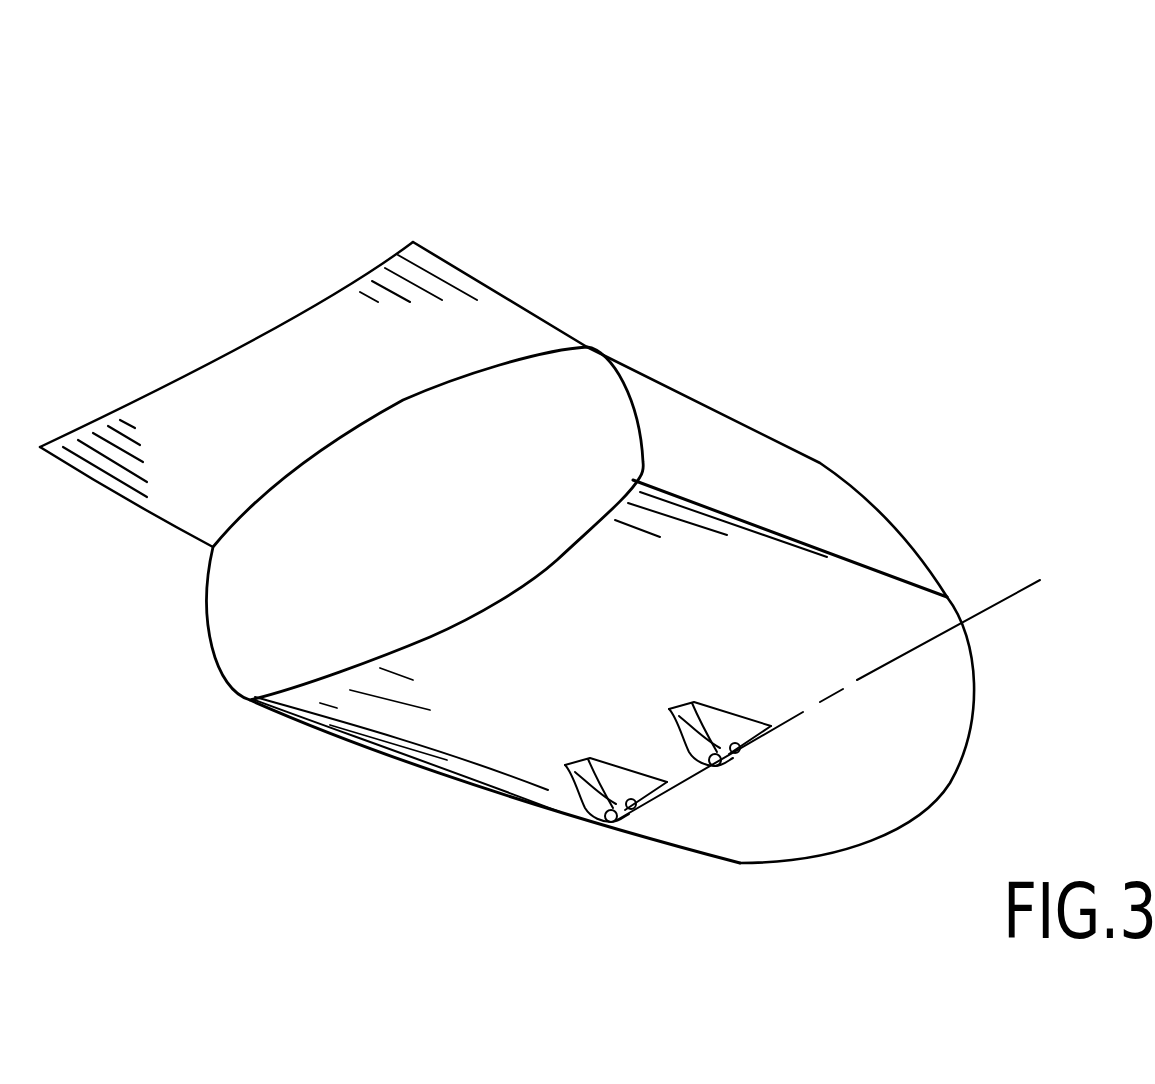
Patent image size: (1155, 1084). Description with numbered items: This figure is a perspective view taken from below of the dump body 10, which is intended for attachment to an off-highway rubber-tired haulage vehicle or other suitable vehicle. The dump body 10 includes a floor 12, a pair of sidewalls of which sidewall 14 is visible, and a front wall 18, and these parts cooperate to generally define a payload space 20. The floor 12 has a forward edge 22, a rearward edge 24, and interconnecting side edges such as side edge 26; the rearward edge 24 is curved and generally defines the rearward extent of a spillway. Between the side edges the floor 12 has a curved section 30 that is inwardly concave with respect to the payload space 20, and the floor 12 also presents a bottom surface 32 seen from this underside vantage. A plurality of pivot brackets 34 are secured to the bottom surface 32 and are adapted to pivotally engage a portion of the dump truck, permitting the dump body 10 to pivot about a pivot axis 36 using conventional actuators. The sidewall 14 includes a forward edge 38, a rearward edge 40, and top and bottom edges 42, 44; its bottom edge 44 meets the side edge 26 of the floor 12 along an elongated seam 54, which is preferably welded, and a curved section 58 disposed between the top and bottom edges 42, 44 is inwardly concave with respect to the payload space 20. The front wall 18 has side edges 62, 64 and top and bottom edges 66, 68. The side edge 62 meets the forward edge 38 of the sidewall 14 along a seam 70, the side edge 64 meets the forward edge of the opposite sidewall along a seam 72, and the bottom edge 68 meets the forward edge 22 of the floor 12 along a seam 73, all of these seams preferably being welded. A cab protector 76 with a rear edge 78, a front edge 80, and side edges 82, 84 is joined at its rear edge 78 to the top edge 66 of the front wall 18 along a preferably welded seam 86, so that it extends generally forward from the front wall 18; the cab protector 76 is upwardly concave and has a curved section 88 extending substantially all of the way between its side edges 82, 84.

The dump body 10 is at (566, 184).
The floor 12 is at (804, 793).
The sidewall 14 is at (833, 507).
The front wall 18 is at (557, 400).
The payload space 20 is at (800, 535).
The forward edge 22 is at (453, 657).
The rearward edge 24 is at (950, 780).
The side edge 26 is at (905, 570).
The curved section 30 is at (537, 695).
The bottom surface 32 is at (617, 651).
The pivot brackets 34 is at (605, 758).
The pivot axis 36 is at (1020, 597).
The forward edge 38 is at (626, 388).
The rearward edge 40 is at (937, 577).
The top edge 42 is at (778, 578).
The bottom edge 44 is at (887, 573).
The elongated seam 54 is at (849, 558).
The curved section 58 is at (708, 486).
The side edge 62 is at (612, 372).
The side edge 64 is at (215, 570).
The top edge 66 is at (362, 427).
The bottom edge 68 is at (373, 655).
The seam 70 is at (645, 465).
The seam 72 is at (205, 607).
The seam 73 is at (311, 688).
The cab protector 76 is at (340, 310).
The rear edge 78 is at (453, 383).
The front edge 80 is at (158, 408).
The side edge 82 is at (497, 290).
The side edge 84 is at (100, 483).
The seam 86 is at (312, 452).
The curved section 88 is at (352, 361).